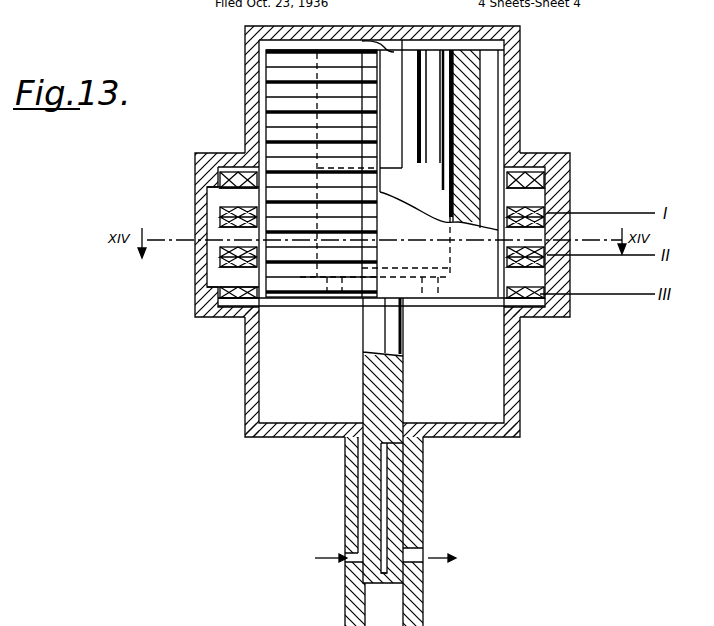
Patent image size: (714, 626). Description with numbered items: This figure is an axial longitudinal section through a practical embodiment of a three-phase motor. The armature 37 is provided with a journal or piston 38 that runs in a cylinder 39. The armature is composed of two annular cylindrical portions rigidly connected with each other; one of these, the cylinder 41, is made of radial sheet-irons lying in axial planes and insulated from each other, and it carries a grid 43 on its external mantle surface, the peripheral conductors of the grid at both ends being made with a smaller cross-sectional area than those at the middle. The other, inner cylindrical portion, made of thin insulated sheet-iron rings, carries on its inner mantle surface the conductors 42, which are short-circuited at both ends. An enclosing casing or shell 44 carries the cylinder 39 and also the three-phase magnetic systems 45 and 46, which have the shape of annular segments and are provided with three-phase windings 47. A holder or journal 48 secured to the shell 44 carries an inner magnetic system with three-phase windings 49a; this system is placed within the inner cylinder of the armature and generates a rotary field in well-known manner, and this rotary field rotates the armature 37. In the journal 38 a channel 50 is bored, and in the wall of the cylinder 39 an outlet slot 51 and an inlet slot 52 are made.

The armature 37 is at (417, 300).
The journal or piston 38 is at (393, 387).
The cylinder 39 is at (418, 479).
The cylinder 41 is at (481, 299).
The conductors 42 is at (428, 49).
The grid 43 is at (288, 48).
The enclosing casing or shell 44 is at (228, 160).
The three-phase magnetic system 45 is at (218, 276).
The three-phase magnetic system 46 is at (547, 197).
The three-phase windings 47 is at (220, 184).
The holder or journal 48 is at (385, 46).
The three-phase windings 49a is at (440, 183).
The channel 50 is at (384, 573).
The outlet slot 51 is at (420, 555).
The inlet slot 52 is at (347, 555).